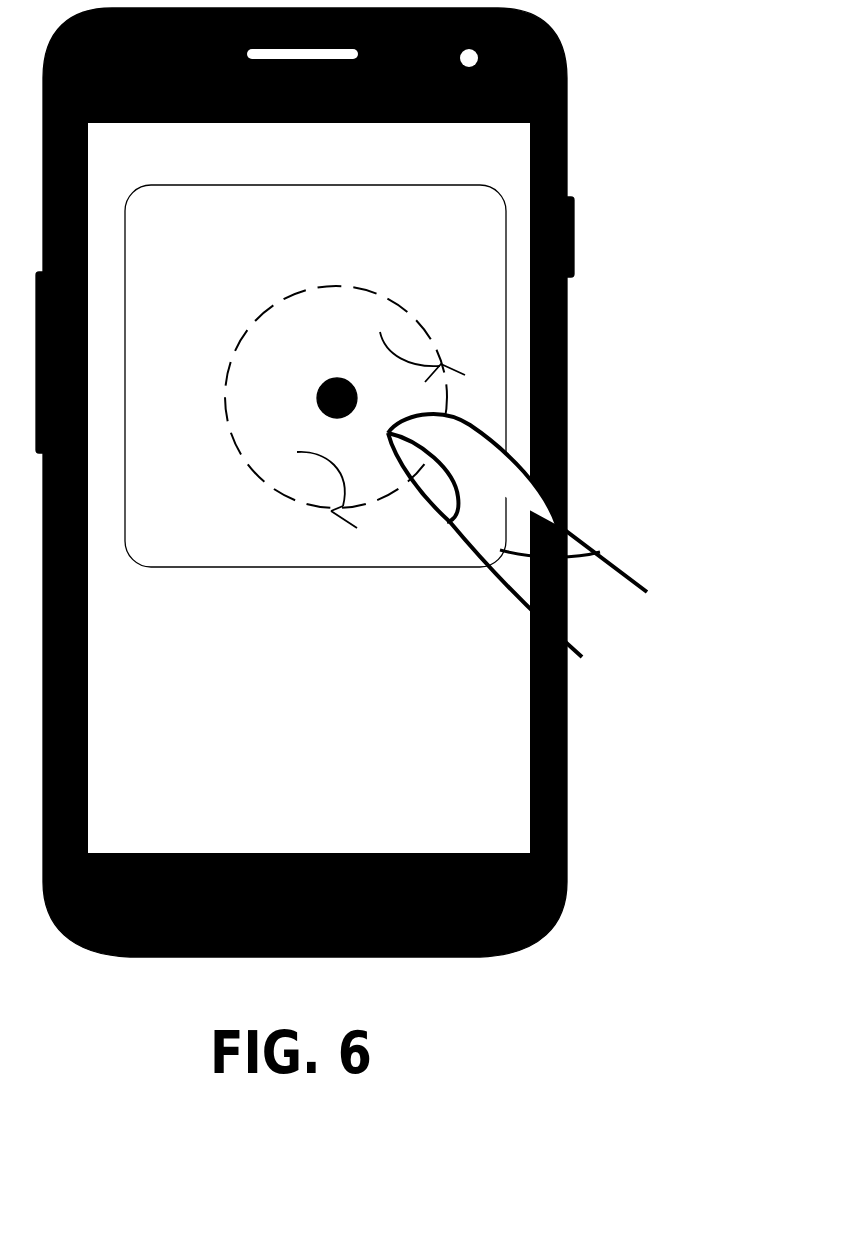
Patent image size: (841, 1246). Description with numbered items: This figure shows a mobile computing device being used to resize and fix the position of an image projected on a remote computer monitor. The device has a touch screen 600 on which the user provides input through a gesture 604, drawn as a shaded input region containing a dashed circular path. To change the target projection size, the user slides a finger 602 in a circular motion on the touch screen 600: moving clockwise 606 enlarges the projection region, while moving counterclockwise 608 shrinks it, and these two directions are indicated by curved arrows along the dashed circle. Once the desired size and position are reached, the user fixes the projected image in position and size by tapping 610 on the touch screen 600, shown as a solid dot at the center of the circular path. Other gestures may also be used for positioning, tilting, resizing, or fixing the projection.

The touch screen 600 is at (500, 160).
The finger 602 is at (600, 552).
The gesture 604 is at (224, 236).
The clockwise motion 606 is at (303, 481).
The counterclockwise motion 608 is at (401, 343).
The tapping 610 is at (317, 388).